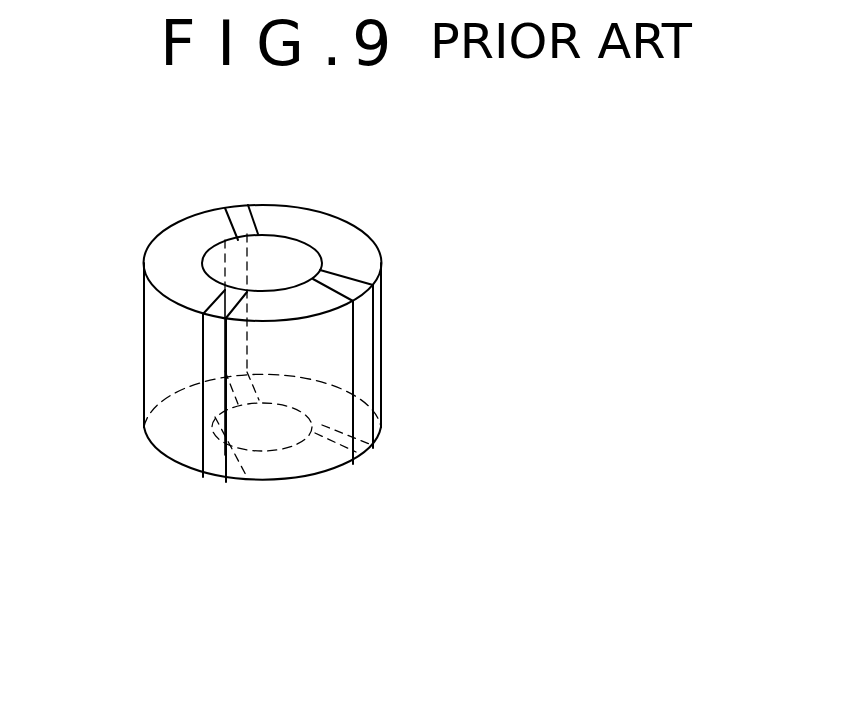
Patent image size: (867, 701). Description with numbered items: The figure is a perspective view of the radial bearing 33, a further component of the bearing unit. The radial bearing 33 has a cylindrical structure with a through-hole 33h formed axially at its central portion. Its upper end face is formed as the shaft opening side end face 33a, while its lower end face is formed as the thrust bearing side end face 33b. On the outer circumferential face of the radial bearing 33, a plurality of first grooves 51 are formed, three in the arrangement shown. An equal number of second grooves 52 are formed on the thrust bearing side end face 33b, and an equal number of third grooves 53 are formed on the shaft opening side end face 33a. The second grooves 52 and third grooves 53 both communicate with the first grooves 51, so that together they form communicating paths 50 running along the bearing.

The radial bearing 33 is at (310, 493).
The shaft opening side end face 33a is at (338, 248).
The thrust bearing side end face 33b is at (333, 485).
The through-hole 33h is at (283, 247).
The third grooves 53 is at (242, 222).
The communicating paths 50 is at (213, 352).
The first grooves 51 is at (203, 410).
The second grooves 52 is at (197, 430).